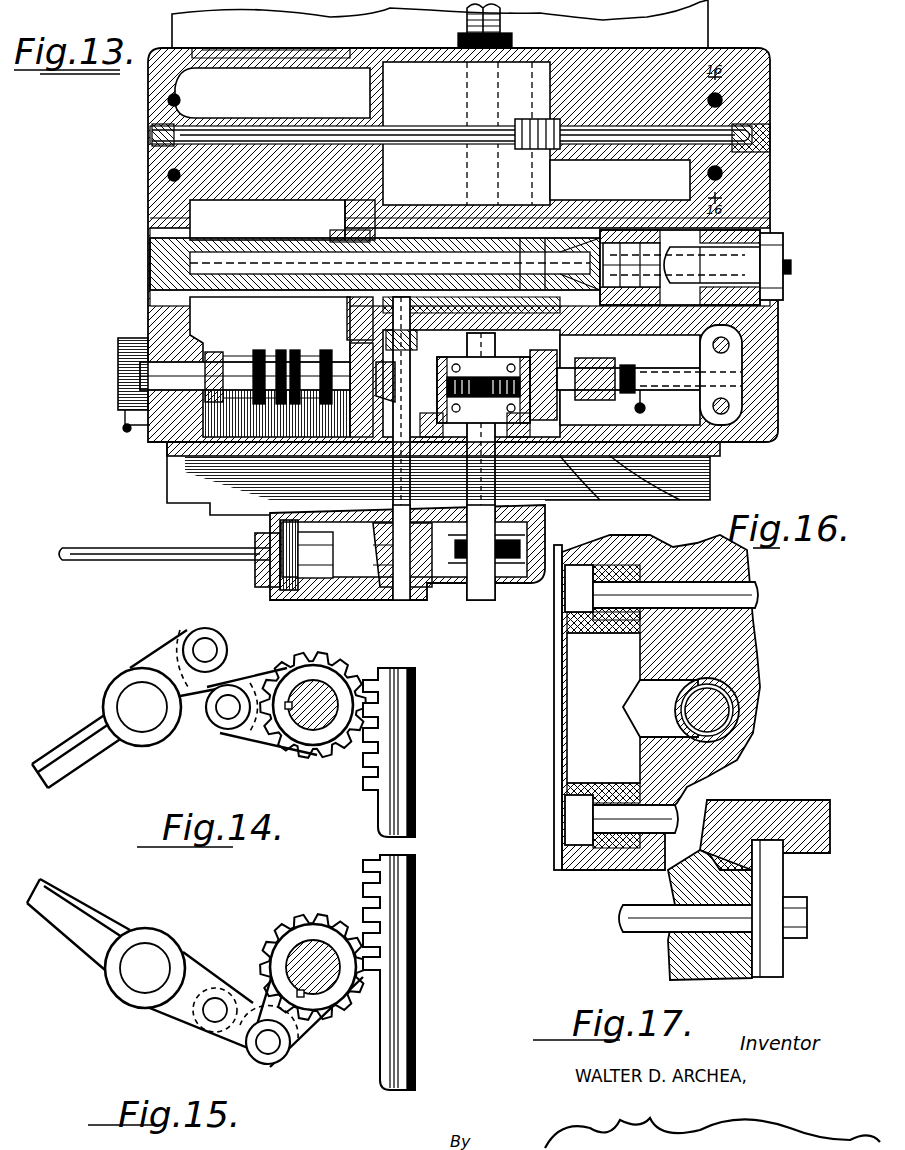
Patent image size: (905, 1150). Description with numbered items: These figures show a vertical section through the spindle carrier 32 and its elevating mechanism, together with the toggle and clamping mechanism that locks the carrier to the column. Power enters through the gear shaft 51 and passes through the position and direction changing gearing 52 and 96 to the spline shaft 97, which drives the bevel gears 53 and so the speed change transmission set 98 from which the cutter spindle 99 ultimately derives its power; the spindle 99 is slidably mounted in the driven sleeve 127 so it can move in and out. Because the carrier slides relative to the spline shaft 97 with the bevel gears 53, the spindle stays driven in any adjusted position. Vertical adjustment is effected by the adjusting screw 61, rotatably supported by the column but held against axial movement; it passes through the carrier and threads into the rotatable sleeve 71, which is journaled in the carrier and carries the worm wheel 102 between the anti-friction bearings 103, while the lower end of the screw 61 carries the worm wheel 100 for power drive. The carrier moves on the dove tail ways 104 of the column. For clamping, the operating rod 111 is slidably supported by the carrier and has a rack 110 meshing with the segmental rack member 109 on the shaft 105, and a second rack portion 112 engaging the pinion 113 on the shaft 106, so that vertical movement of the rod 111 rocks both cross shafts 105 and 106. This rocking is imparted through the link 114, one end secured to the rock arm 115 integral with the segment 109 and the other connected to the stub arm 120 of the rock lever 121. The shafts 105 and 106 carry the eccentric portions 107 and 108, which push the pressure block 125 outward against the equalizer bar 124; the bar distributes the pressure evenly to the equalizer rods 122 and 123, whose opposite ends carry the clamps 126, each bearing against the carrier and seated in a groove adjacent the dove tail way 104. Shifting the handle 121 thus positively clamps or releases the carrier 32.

In FIG. 13, the spindle carrier 32 is at (150, 186).
In FIG. 13, the gear shaft 51 is at (100, 548).
In FIG. 13, the direction changing gears 52 is at (380, 590).
In FIG. 13, the bevel gears 53 is at (397, 380).
In FIG. 13, the spindle carrier adjusting screw 61 is at (505, 24).
In FIG. 13, the rotatable sleeve 71 is at (520, 445).
In FIG. 13, the position and direction changing gearing 96 is at (282, 596).
In FIG. 13, the spline shaft 97 is at (394, 496).
In FIG. 13, the speed change transmission set 98 is at (280, 366).
In FIG. 13, the cutter spindle 99 is at (782, 290).
In FIG. 13, the worm wheel 100 is at (500, 592).
In FIG. 13, the worm wheel 102 is at (548, 452).
In FIG. 13, the anti-friction bearings 103 is at (456, 430).
In FIG. 17, the dove tail ways 104 is at (735, 874).
In FIG. 13, the shaft 105 is at (152, 132).
In FIG. 14, the shaft 105 is at (310, 690).
In FIG. 16, the shaft 105 is at (718, 702).
In FIG. 13, the shaft 106 is at (745, 373).
In FIG. 13, the eccentric portion 107 is at (152, 150).
In FIG. 16, the eccentric portion 107 is at (735, 712).
In FIG. 13, the eccentric portion 108 is at (770, 347).
In FIG. 14, the segmental rack member 109 is at (343, 760).
In FIG. 15, the segmental rack member 109 is at (362, 977).
In FIG. 14, the rack 110 is at (380, 710).
In FIG. 15, the rack 110 is at (370, 893).
In FIG. 14, the operating rod 111 is at (415, 768).
In FIG. 15, the operating rod 111 is at (418, 893).
In FIG. 13, the second rack portion 112 is at (612, 455).
In FIG. 13, the pinion 113 is at (572, 362).
In FIG. 14, the link 114 is at (200, 720).
In FIG. 15, the link 114 is at (240, 1048).
In FIG. 14, the rock arm 115 is at (257, 727).
In FIG. 15, the rock arm 115 is at (308, 1023).
In FIG. 14, the stub arm 120 is at (168, 658).
In FIG. 15, the stub arm 120 is at (182, 1012).
In FIG. 14, the rock lever 121 is at (82, 772).
In FIG. 15, the rock lever 121 is at (86, 943).
In FIG. 13, the equalizer rod 122 is at (728, 100).
In FIG. 16, the equalizer rod 122 is at (750, 593).
In FIG. 13, the equalizer rod 123 is at (728, 176).
In FIG. 16, the equalizer rod 123 is at (662, 812).
In FIG. 16, the equalizer bar 124 is at (580, 712).
In FIG. 16, the pressure block 125 is at (672, 690).
In FIG. 17, the clamp 126 is at (773, 953).
In FIG. 13, the driven sleeve 127 is at (262, 247).